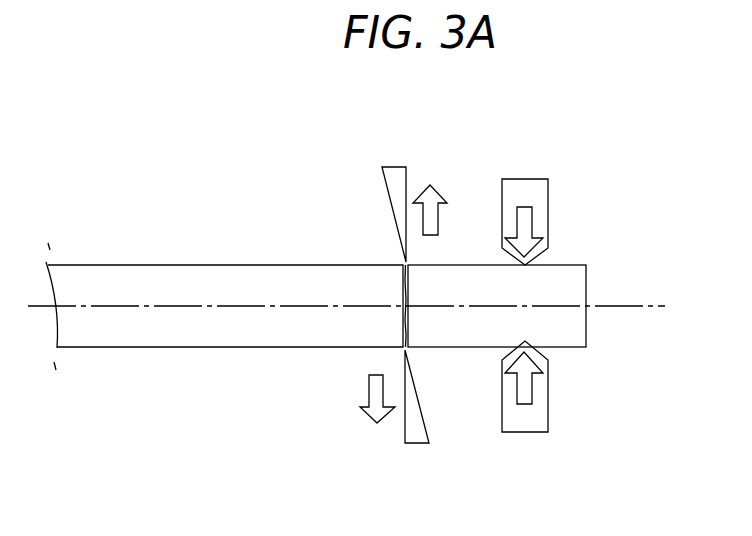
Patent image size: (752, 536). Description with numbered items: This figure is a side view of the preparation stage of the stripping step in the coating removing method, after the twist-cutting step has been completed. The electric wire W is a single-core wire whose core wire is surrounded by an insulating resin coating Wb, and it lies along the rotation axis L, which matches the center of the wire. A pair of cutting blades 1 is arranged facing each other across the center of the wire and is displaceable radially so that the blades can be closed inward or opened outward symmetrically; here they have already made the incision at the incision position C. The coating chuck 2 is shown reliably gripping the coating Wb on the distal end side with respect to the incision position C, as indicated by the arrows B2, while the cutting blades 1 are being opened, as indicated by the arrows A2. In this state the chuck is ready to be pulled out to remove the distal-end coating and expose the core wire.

The cutting blade 1 is at (393, 175).
The coating chuck 2 is at (523, 190).
The arrows indicating opening of cutting blade A2 is at (403, 308).
The arrows indicating gripping operation of coating chuck B2 is at (533, 222).
The electric wire W is at (231, 334).
The coating Wb is at (565, 263).
The incision position C is at (402, 320).
The rotation axis L is at (624, 303).